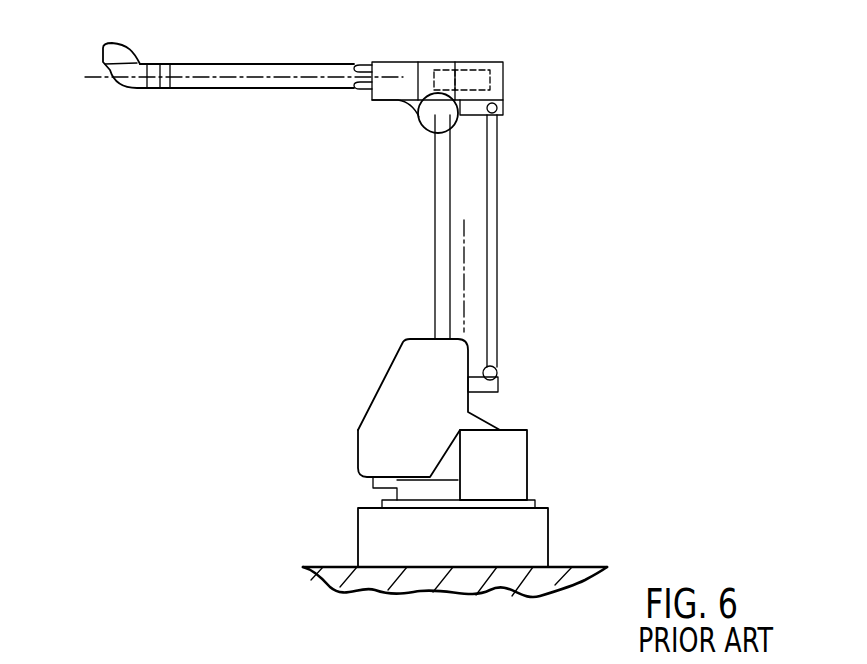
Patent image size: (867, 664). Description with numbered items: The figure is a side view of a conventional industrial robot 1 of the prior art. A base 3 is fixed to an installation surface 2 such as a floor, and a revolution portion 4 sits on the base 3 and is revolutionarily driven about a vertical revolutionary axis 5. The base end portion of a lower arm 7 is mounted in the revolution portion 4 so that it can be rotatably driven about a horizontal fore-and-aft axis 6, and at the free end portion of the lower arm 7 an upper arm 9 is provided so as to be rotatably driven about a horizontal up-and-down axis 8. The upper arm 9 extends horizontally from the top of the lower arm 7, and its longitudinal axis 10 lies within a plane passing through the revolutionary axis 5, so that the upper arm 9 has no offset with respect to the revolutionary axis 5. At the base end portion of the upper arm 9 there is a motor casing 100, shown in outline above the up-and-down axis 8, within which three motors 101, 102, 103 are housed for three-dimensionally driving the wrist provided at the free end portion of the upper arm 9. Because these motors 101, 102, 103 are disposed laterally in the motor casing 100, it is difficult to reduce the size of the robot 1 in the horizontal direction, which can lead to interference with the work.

The industrial robot 1 is at (183, 259).
The installation surface 2 is at (370, 571).
The base 3 is at (368, 517).
The revolution portion 4 is at (518, 460).
The revolutionary axis 5 is at (465, 250).
The fore-and-aft axis 6 is at (402, 387).
The lower arm 7 is at (443, 260).
The up-and-down axis 8 is at (432, 118).
The upper arm 9 is at (202, 90).
The longitudinal axis 10 is at (266, 79).
The motor casing 100 is at (428, 62).
The motor 101 is at (477, 70).
The motor 102 is at (462, 80).
The motor 103 is at (462, 80).